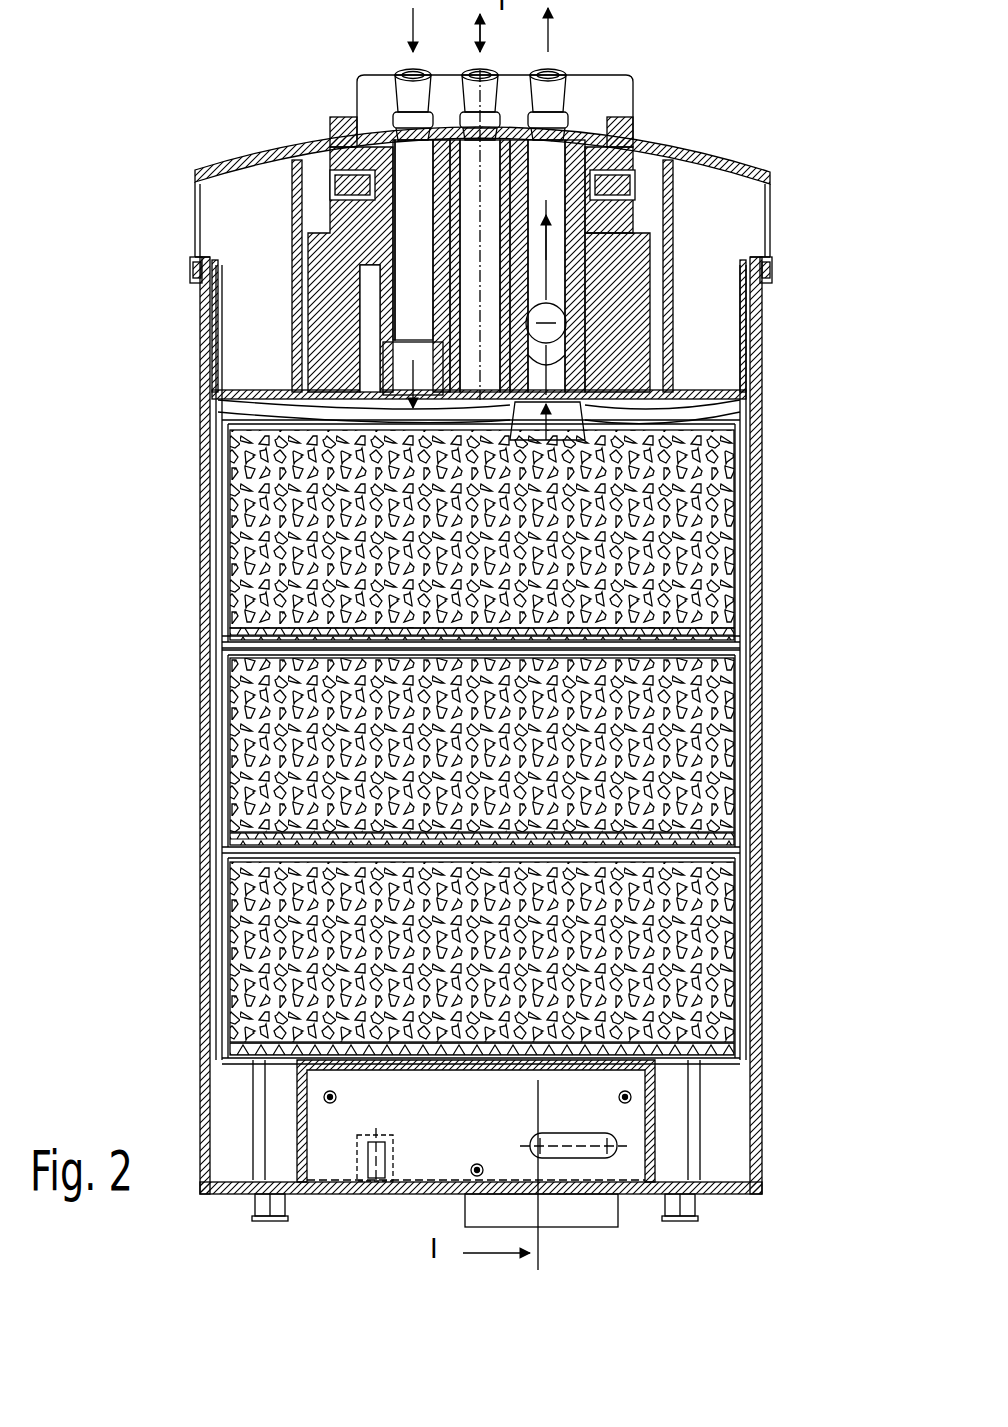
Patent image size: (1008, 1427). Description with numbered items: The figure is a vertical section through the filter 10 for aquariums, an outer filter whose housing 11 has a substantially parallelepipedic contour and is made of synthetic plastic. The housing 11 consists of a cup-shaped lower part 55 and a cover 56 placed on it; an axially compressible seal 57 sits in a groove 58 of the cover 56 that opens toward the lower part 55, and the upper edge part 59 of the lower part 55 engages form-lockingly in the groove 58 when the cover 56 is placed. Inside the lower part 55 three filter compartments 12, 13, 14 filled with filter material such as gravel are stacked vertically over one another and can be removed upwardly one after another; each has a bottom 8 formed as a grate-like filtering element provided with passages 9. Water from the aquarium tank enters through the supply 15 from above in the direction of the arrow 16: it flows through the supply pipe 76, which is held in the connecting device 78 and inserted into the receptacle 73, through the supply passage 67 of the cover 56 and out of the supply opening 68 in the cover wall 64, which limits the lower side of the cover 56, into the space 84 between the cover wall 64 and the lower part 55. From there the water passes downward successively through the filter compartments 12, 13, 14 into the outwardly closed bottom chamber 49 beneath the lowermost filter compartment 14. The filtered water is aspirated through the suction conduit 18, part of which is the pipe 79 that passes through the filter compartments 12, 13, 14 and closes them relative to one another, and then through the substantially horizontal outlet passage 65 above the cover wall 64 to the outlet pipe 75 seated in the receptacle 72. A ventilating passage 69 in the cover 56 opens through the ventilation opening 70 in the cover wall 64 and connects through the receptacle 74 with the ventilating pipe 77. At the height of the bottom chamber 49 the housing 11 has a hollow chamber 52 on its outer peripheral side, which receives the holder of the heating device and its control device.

The bottom 8 is at (432, 605).
The passages 9 is at (460, 612).
The filter 10 is at (808, 228).
The housing 11 is at (770, 455).
The filter compartment 12 is at (735, 543).
The filter compartment 13 is at (757, 750).
The filter compartment 14 is at (748, 962).
The supply 15 is at (393, 365).
The arrow 16 is at (465, 410).
The suction conduit 18 is at (673, 373).
The bottom chamber 49 is at (237, 1163).
The hollow chamber 52 is at (320, 1143).
The lower part 55 is at (752, 620).
The cover 56 is at (772, 180).
The seal 57 is at (774, 272).
The groove 58 is at (192, 272).
The upper edge part 59 is at (200, 290).
The cover wall 64 is at (668, 398).
The outlet passage 65 is at (673, 247).
The supply passage 67 is at (393, 327).
The supply opening 68 is at (430, 400).
The ventilating passage 69 is at (560, 425).
The ventilation opening 70 is at (600, 445).
The receptacle 72 is at (672, 220).
The receptacle 73 is at (330, 252).
The receptacle 74 is at (320, 285).
The outlet pipe 75 is at (640, 190).
The supply pipe 76 is at (330, 220).
The ventilating pipe 77 is at (395, 150).
The connecting device 78 is at (610, 97).
The pipe 79 is at (470, 470).
The space 84 is at (500, 423).